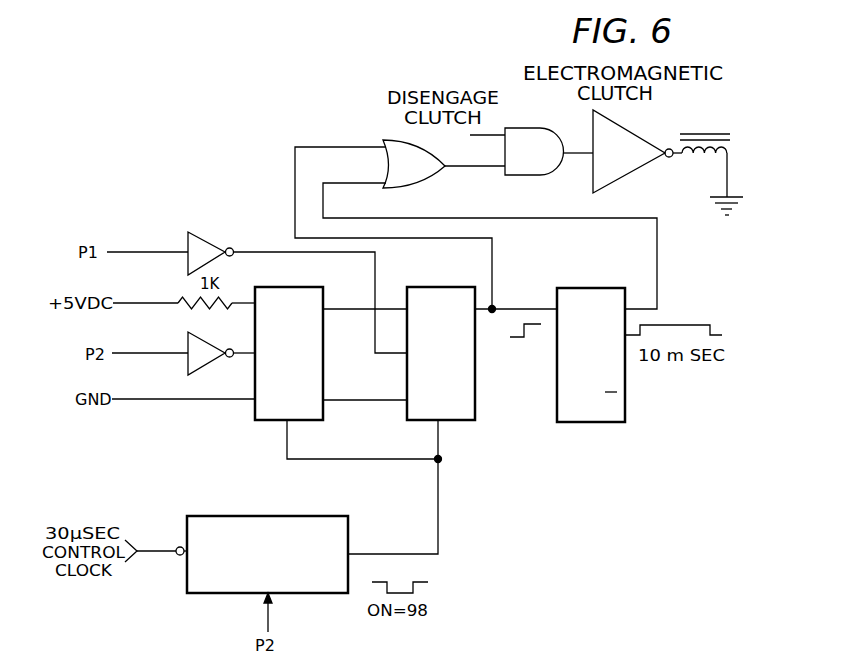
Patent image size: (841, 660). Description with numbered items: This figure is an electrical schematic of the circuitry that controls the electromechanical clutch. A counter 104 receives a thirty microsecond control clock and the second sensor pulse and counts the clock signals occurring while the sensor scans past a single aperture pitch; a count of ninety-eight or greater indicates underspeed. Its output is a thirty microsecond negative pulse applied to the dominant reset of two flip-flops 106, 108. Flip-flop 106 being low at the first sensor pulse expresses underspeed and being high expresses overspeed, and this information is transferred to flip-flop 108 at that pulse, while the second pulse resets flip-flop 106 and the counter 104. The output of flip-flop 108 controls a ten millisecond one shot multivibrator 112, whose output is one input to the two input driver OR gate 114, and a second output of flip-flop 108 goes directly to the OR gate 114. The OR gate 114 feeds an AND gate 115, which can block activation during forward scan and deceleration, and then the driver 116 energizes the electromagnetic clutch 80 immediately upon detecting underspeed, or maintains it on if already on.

The "OR" gate 114 is at (381, 140).
The AND gate 115 is at (555, 176).
The driver 116 is at (637, 169).
The electromagnetic clutch 80 is at (696, 160).
The flip-flop 106 is at (308, 287).
The flip-flop 108 is at (463, 287).
The one-shot multivibrator 112 is at (614, 288).
The counter 104 is at (240, 516).